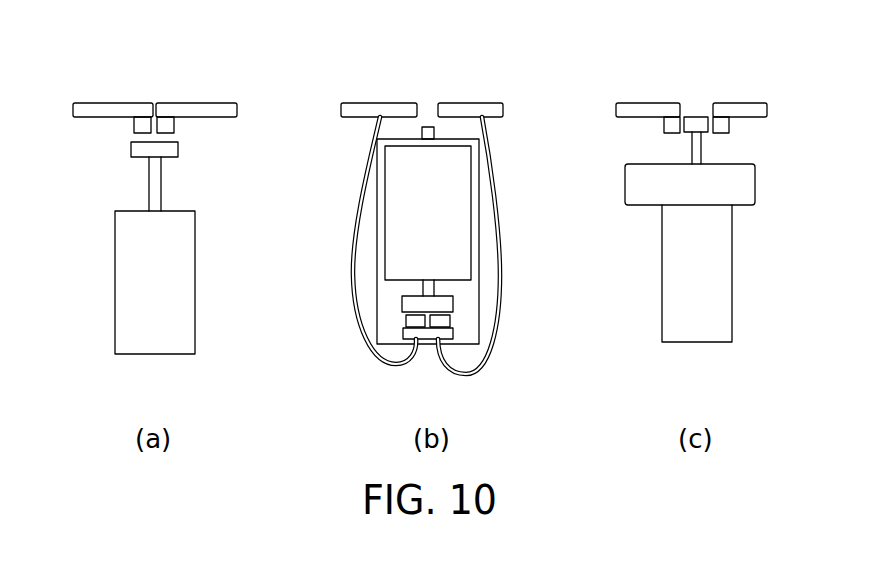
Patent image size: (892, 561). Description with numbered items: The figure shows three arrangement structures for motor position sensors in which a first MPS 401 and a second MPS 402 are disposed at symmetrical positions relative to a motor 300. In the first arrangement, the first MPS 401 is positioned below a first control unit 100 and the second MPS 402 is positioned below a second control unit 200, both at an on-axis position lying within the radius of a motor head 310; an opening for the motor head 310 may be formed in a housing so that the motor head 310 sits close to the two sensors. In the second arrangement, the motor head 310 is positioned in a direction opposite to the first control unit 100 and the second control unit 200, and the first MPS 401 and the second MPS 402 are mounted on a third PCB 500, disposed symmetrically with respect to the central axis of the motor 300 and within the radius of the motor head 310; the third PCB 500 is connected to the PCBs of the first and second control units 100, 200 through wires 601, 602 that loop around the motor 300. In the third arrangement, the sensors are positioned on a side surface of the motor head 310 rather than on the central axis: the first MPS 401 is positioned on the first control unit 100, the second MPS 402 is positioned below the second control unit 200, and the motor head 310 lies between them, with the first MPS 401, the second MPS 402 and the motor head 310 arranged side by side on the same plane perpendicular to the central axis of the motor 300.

The first control unit 100 is at (80, 103).
The second control unit 200 is at (222, 103).
The motor 300 is at (120, 268).
The motor head 310 is at (131, 150).
The first MPS 401 is at (134, 124).
The second MPS 402 is at (174, 124).
The third PCB 500 is at (427, 340).
The wire 601 is at (352, 274).
The wire 602 is at (497, 266).